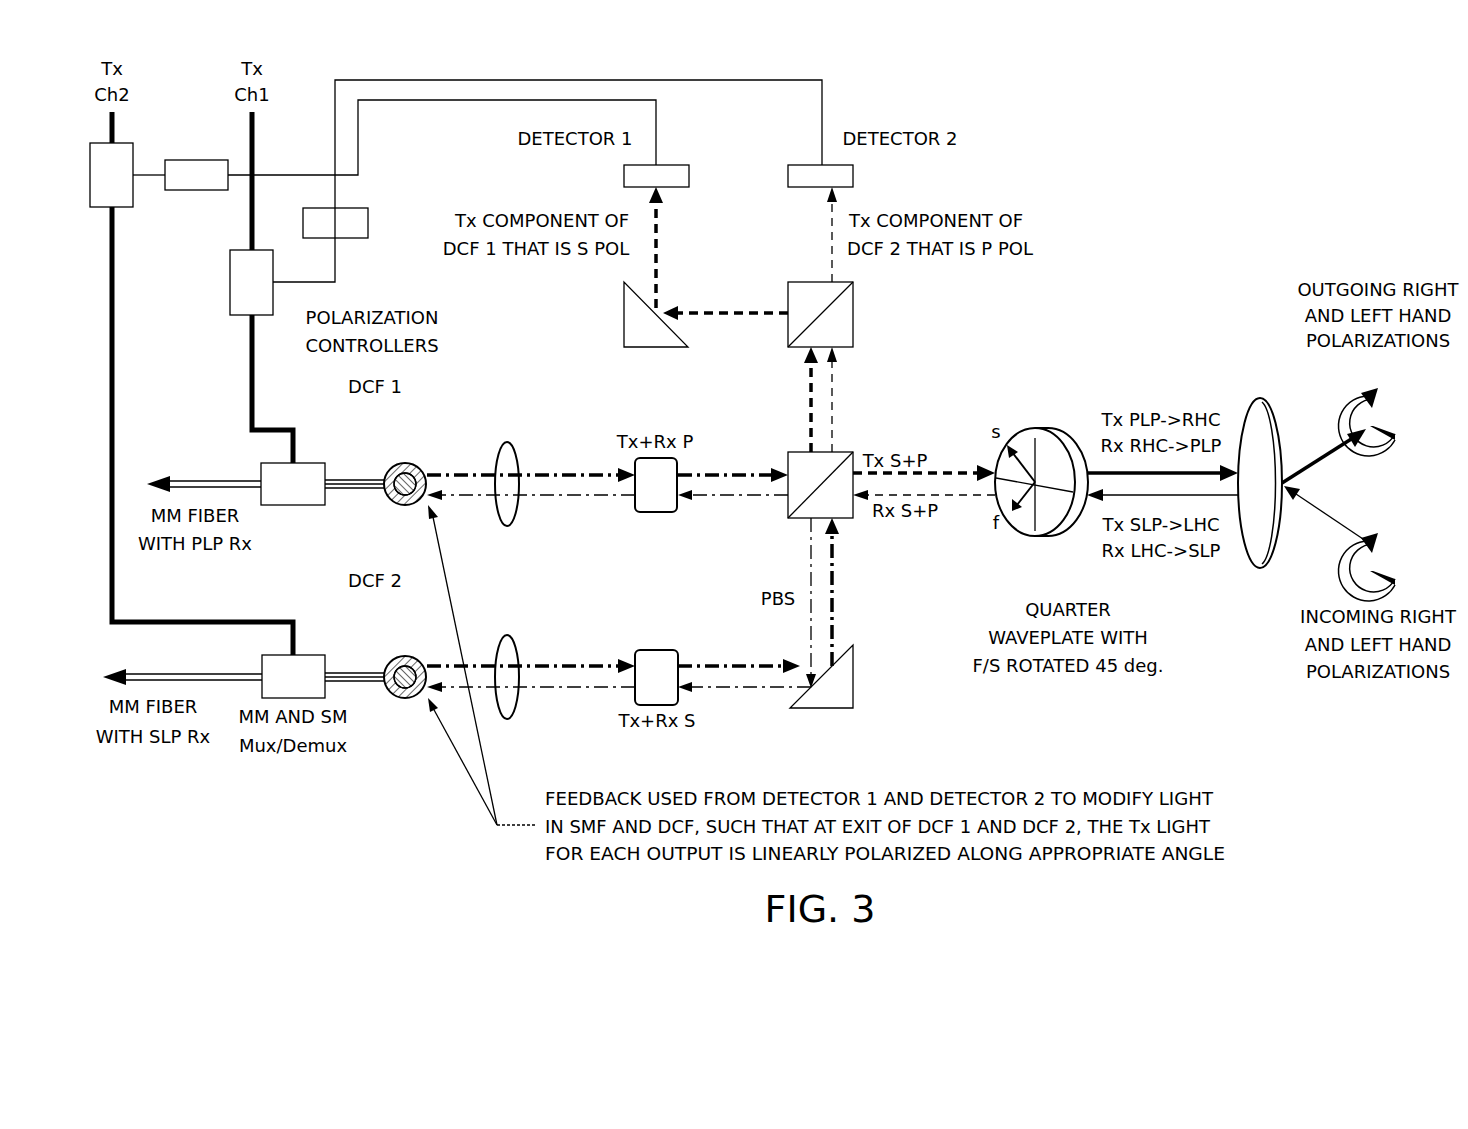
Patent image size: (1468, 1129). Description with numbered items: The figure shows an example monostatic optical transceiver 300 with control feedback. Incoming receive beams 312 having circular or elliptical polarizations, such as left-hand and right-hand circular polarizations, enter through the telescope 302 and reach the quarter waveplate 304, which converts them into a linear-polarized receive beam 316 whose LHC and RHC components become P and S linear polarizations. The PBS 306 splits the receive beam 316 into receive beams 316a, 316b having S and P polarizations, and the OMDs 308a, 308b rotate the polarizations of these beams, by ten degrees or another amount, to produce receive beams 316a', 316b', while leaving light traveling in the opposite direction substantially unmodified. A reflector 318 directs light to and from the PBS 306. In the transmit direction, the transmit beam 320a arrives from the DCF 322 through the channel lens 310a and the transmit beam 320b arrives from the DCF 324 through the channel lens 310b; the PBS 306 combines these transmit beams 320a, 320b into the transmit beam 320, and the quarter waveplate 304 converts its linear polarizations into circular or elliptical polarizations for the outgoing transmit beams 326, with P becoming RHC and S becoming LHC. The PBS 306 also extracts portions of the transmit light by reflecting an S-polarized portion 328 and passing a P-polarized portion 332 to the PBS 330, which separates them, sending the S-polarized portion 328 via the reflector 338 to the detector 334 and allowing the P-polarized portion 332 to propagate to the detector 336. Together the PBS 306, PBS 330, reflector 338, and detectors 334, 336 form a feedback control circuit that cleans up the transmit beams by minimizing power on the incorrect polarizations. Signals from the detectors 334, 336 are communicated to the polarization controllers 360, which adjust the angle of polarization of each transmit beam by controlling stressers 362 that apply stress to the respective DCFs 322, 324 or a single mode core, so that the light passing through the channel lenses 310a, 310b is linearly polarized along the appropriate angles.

The monostatic optical transceiver 300 is at (1286, 90).
The telescope 302 is at (1255, 400).
The quarter waveplate 304 is at (1057, 536).
The PBS 306 is at (800, 520).
The OMD 308a is at (657, 514).
The OMD 308b is at (655, 648).
The channel lens 310a is at (507, 443).
The channel lens 310b is at (507, 637).
The receive beams 312 is at (1333, 527).
The linear-polarized receive beam 316 is at (947, 497).
The receive beam 316a is at (733, 521).
The receive beam 316a' is at (531, 521).
The receive beam 316b is at (744, 712).
The receive beam 316b' is at (531, 712).
The reflector 318 is at (853, 675).
The transmit beam 320 is at (947, 470).
The transmit beam 320a is at (562, 472).
The transmit beam 320b is at (570, 662).
The DCF 322 is at (390, 457).
The DCF 324 is at (390, 649).
The transmit beams 326 is at (1333, 440).
The S-polarized portion 328 is at (808, 410).
The PBS 330 is at (853, 325).
The P-polarized portion 332 is at (835, 410).
The detector 334 is at (624, 176).
The detector 336 is at (853, 176).
The reflector 338 is at (624, 325).
The polarization controller 360 is at (198, 160).
The stresser 362 is at (133, 195).